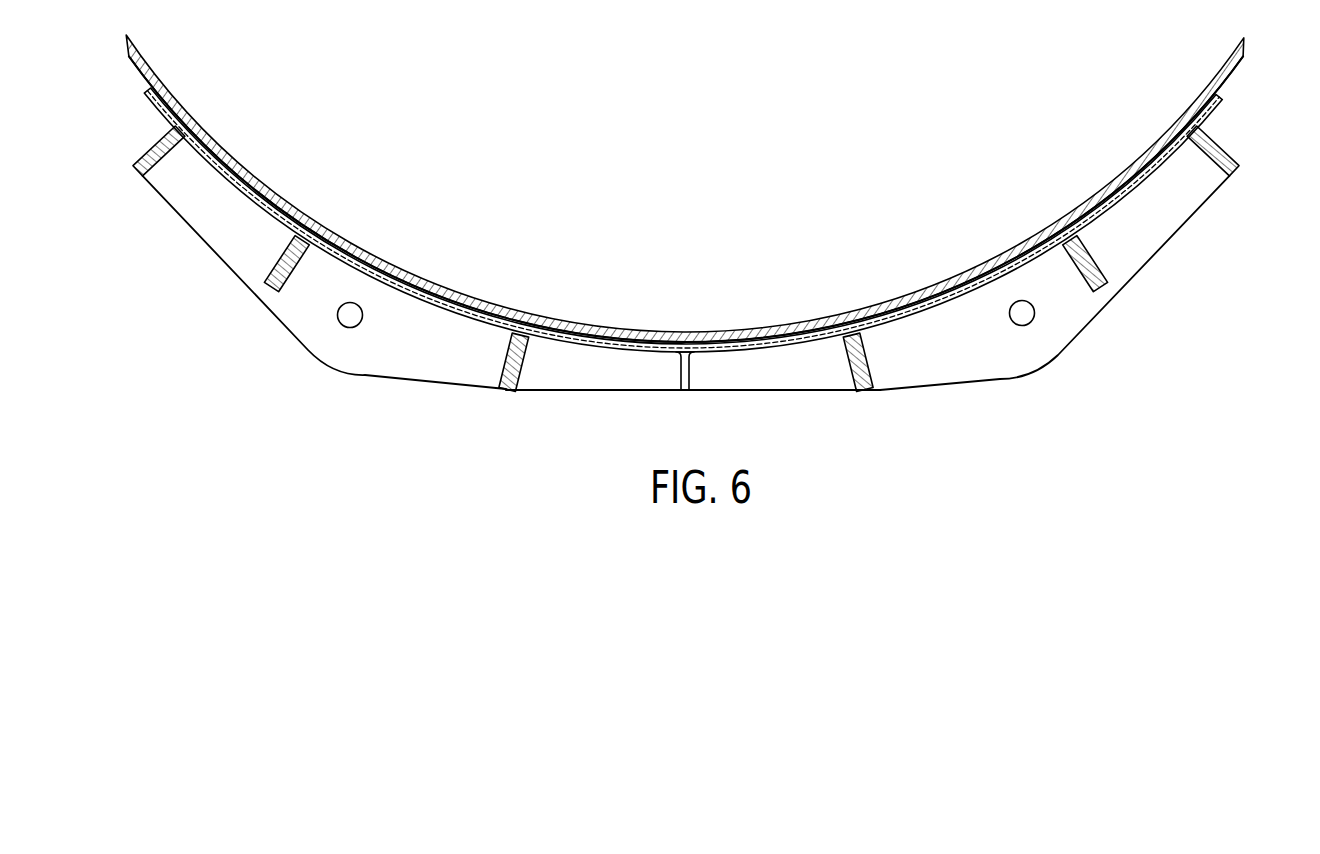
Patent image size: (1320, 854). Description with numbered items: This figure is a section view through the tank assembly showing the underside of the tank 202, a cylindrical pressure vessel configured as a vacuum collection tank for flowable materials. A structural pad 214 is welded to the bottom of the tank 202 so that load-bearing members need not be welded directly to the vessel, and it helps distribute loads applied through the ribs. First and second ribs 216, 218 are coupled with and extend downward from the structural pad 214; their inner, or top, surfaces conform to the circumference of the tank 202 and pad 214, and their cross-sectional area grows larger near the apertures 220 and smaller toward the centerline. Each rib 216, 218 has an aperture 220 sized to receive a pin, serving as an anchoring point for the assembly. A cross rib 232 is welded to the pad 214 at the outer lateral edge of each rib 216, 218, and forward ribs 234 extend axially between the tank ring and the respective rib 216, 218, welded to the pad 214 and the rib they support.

The tank 202 is at (1241, 56).
The structural pad 214 is at (1212, 117).
The cross rib 232 is at (137, 164).
The forward ribs 234 is at (277, 292).
The second rib 218 is at (287, 330).
The first rib 216 is at (1073, 348).
The aperture 220 is at (348, 328).